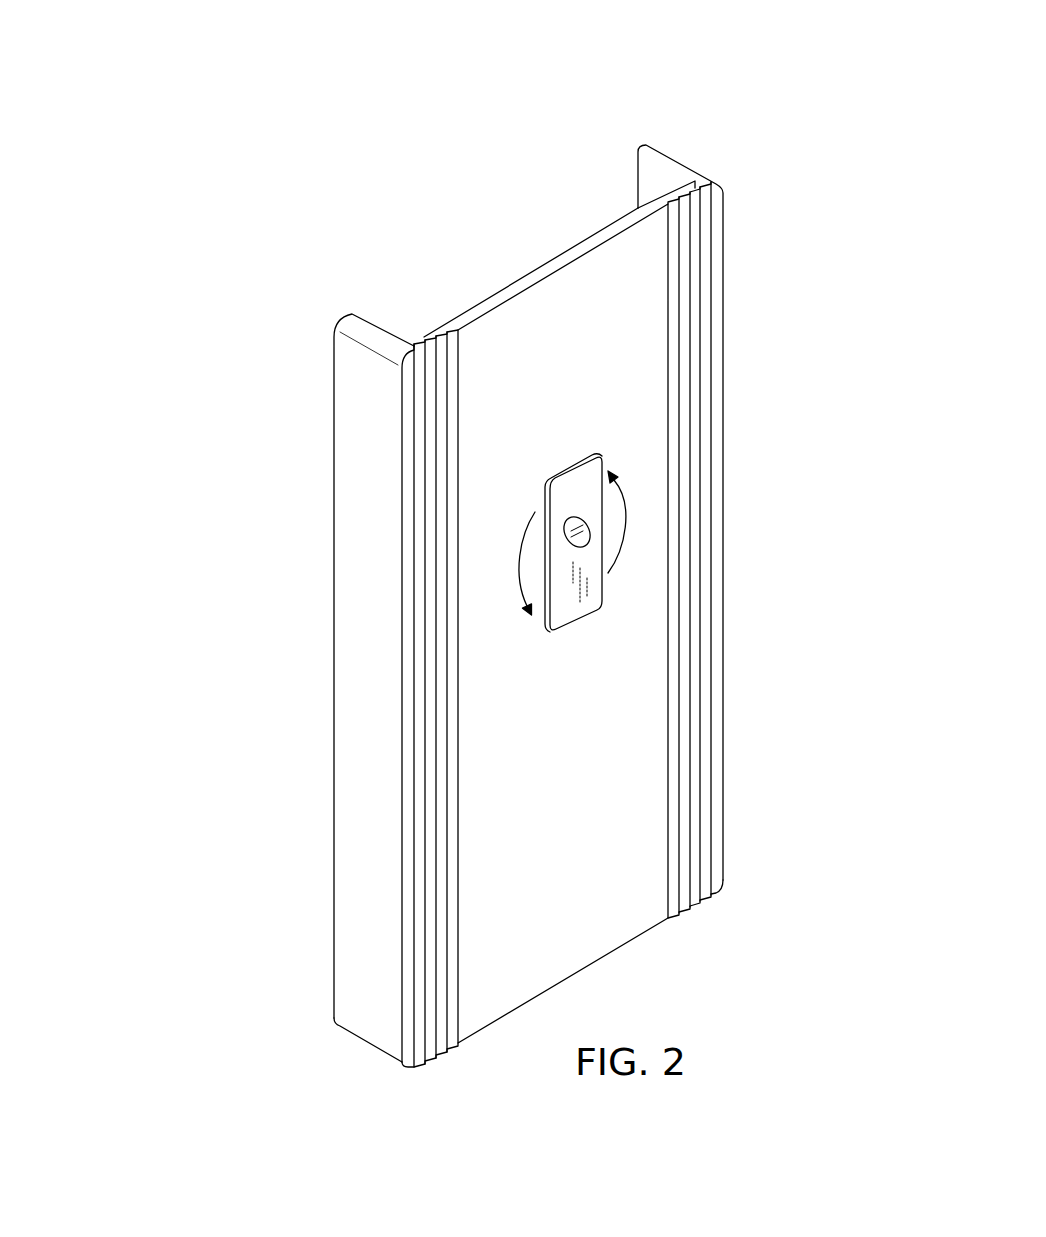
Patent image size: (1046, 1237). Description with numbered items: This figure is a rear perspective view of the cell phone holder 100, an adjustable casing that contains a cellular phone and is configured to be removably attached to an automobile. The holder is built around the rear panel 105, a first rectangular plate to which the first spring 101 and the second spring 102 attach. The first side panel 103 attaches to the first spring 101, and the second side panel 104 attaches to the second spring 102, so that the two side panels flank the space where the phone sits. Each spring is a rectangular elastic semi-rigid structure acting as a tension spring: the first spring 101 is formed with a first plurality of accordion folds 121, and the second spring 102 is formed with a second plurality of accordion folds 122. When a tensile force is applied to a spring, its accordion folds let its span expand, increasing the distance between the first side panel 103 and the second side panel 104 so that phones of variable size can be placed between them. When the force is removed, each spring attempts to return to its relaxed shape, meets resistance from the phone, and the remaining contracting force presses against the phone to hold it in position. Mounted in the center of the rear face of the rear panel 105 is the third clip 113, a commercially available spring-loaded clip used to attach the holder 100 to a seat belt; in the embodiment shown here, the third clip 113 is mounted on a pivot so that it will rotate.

The cell phone holder 100 is at (245, 134).
The first spring 101 is at (690, 244).
The second spring 102 is at (427, 330).
The first side panel 103 is at (677, 160).
The second side panel 104 is at (356, 398).
The rear panel 105 is at (565, 320).
The third clip 113 is at (585, 613).
The first plurality of accordion folds 121 is at (685, 887).
The second plurality of accordion folds 122 is at (423, 1033).